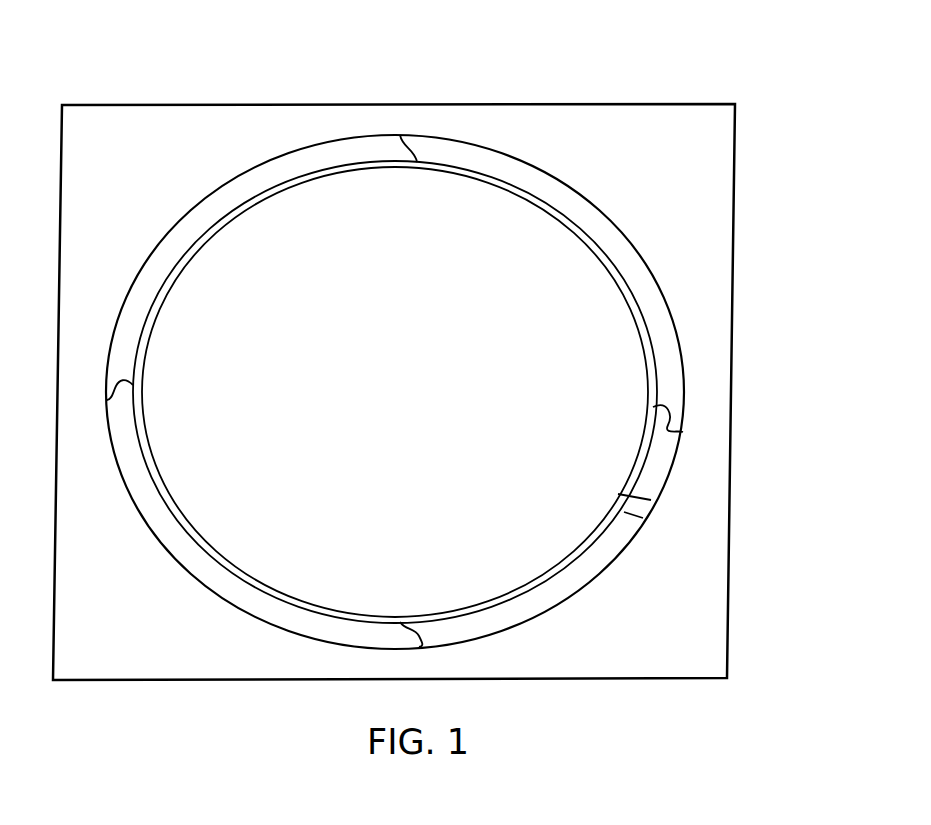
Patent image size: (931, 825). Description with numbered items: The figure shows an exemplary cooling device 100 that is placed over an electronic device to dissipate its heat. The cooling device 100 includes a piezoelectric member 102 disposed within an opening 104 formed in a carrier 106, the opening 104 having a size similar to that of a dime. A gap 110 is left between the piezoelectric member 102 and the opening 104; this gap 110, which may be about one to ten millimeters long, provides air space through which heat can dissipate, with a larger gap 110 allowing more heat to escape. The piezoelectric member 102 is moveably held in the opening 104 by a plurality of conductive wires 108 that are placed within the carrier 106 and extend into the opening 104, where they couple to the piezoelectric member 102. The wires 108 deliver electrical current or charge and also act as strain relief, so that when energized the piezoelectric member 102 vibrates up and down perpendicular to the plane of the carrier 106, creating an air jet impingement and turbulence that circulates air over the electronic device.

The cooling device 100 is at (364, 90).
The piezoelectric member 102 is at (415, 381).
The opening 104 is at (665, 291).
The carrier 106 is at (644, 161).
The conductive wires 108 is at (681, 408).
The gap 110 is at (652, 497).